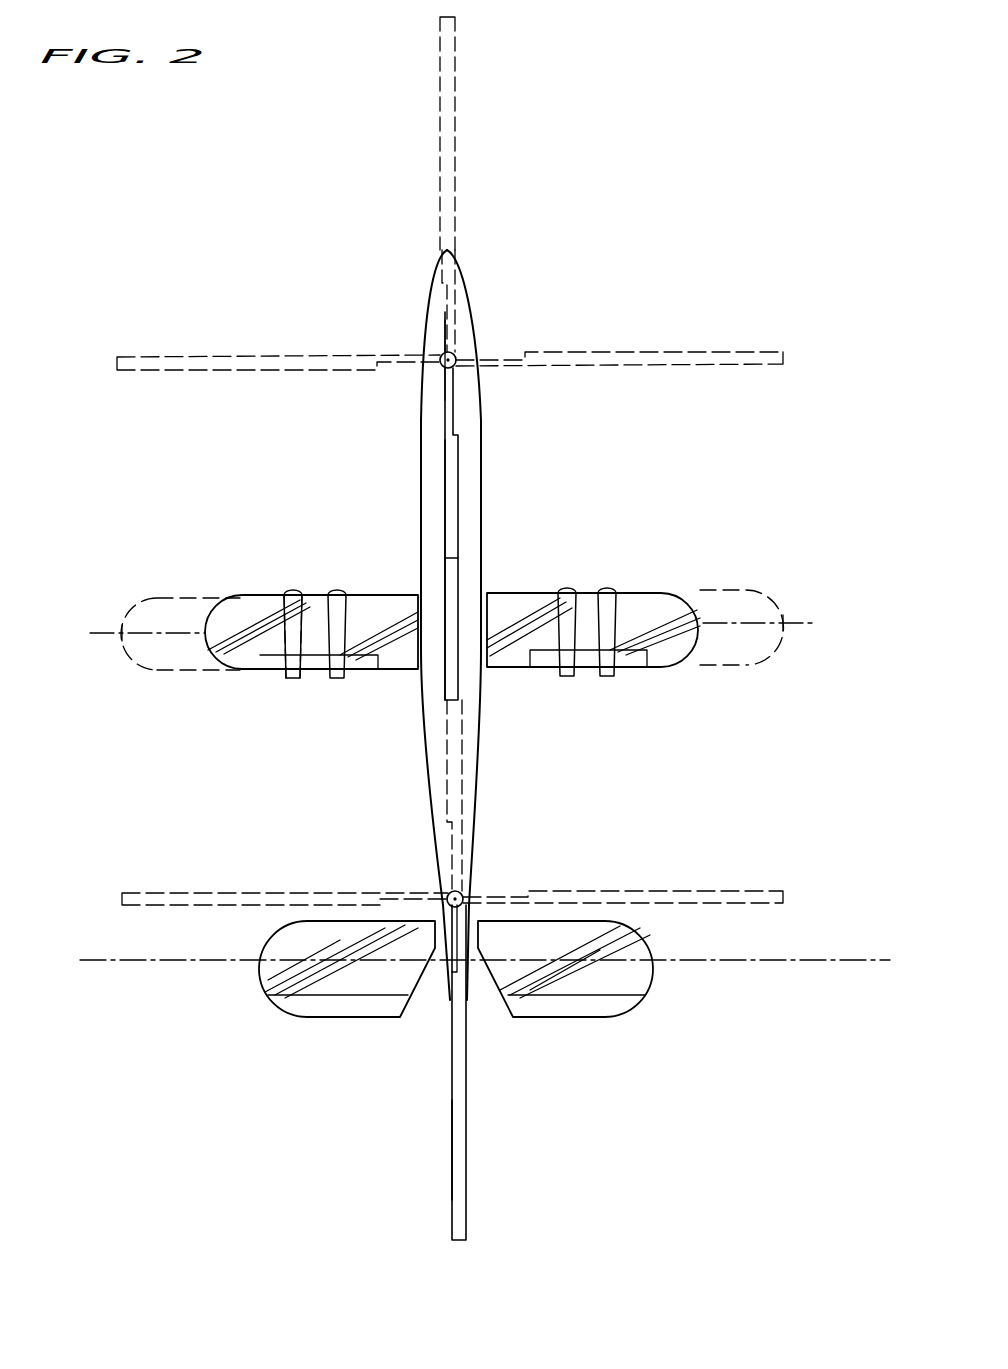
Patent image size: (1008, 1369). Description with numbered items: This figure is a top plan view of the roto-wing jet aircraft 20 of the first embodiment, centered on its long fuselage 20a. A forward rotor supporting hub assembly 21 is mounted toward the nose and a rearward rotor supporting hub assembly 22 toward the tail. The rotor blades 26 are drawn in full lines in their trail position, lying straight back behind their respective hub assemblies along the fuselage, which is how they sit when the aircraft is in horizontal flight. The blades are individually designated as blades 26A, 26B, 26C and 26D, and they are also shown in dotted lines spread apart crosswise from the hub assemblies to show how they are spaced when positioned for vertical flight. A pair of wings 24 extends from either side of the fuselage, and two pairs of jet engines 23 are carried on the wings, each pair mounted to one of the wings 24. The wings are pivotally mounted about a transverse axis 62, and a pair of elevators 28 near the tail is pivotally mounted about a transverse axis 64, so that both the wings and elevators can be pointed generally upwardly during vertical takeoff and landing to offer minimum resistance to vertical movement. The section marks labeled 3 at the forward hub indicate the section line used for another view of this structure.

The roto-wing jet aircraft 20 is at (482, 540).
The fuselage 20a is at (420, 487).
The forward rotor supporting hub assembly 21 is at (456, 354).
The rearward rotor supporting hub assembly 22 is at (462, 892).
The jet engines 23 is at (335, 592).
The wings 24 is at (374, 612).
The rotor blades 26 is at (458, 462).
The rotor blade 26A is at (459, 507).
The rotor blade 26B is at (641, 352).
The rotor blade 26C is at (455, 118).
The rotor blade 26D is at (240, 356).
The elevators 28 is at (272, 955).
The transverse axis 62 is at (192, 633).
The transverse axis 64 is at (840, 958).
The section line 3- 3 is at (445, 327).